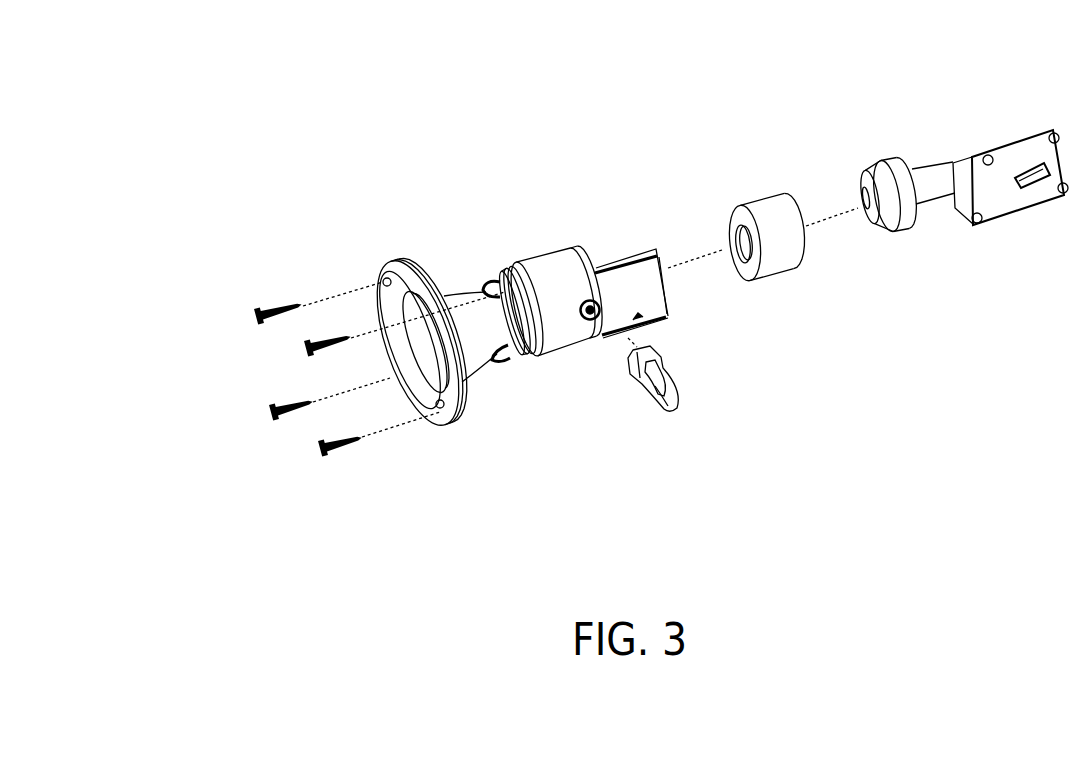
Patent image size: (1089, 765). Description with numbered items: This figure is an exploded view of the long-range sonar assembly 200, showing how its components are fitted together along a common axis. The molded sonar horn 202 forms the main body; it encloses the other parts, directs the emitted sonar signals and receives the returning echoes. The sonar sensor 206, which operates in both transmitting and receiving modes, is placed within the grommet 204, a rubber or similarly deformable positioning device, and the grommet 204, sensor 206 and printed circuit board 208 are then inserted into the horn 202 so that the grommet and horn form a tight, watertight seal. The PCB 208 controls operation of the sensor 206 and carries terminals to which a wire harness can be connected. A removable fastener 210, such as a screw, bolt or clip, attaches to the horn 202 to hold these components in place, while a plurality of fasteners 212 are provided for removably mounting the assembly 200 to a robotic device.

The long-range sonar assembly 200 is at (298, 102).
The sonar horn 202 is at (393, 272).
The grommet 204 is at (755, 205).
The sonar sensor 206 is at (878, 163).
The printed circuit board 208 is at (1023, 148).
The fastener 210 is at (660, 417).
The fasteners 212 is at (317, 447).